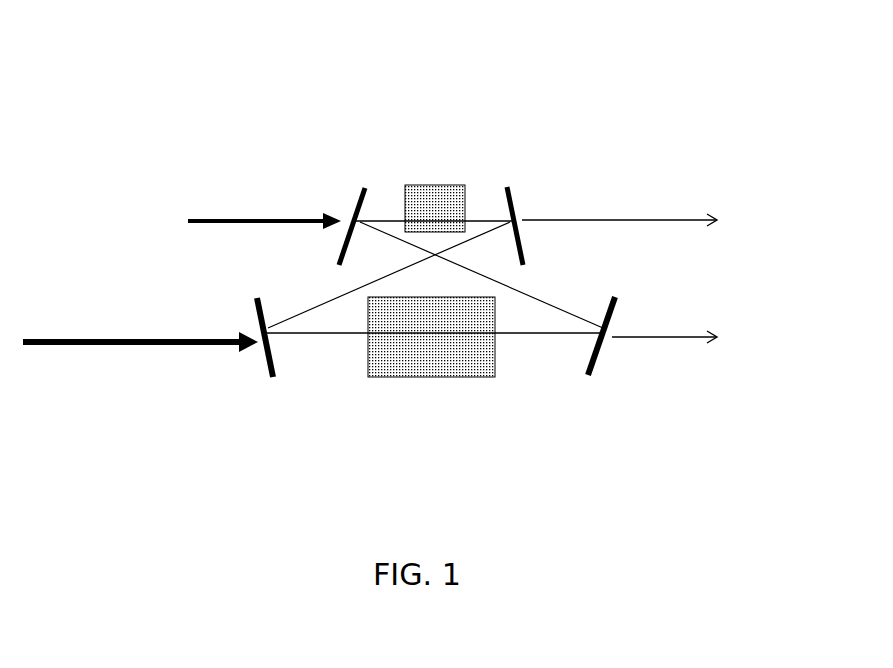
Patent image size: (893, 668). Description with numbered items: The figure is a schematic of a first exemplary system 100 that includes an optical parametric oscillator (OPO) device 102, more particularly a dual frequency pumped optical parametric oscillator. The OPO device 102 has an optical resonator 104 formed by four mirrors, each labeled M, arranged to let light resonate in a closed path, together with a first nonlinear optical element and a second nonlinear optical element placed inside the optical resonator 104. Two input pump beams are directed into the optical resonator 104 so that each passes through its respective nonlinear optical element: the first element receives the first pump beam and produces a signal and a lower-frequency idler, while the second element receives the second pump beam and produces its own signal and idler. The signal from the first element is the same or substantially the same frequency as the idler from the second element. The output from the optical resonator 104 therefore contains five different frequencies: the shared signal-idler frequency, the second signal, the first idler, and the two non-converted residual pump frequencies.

The first exemplary system 100 is at (404, 260).
The optical parametric oscillator (OPO) device 102 is at (418, 105).
The optical resonator 104 is at (323, 413).